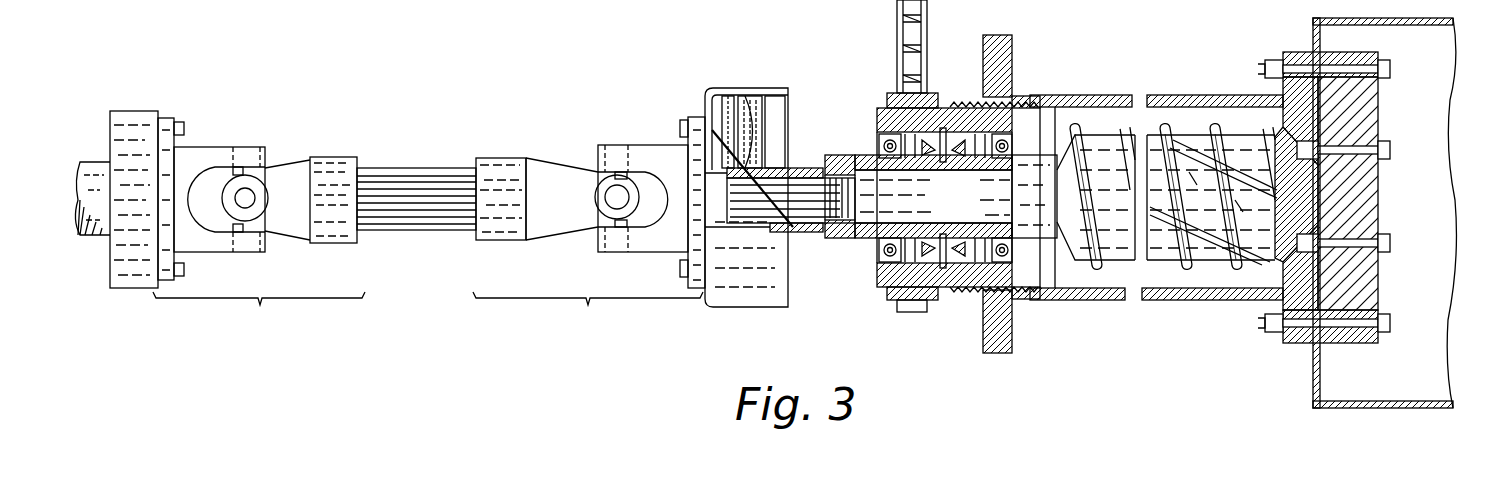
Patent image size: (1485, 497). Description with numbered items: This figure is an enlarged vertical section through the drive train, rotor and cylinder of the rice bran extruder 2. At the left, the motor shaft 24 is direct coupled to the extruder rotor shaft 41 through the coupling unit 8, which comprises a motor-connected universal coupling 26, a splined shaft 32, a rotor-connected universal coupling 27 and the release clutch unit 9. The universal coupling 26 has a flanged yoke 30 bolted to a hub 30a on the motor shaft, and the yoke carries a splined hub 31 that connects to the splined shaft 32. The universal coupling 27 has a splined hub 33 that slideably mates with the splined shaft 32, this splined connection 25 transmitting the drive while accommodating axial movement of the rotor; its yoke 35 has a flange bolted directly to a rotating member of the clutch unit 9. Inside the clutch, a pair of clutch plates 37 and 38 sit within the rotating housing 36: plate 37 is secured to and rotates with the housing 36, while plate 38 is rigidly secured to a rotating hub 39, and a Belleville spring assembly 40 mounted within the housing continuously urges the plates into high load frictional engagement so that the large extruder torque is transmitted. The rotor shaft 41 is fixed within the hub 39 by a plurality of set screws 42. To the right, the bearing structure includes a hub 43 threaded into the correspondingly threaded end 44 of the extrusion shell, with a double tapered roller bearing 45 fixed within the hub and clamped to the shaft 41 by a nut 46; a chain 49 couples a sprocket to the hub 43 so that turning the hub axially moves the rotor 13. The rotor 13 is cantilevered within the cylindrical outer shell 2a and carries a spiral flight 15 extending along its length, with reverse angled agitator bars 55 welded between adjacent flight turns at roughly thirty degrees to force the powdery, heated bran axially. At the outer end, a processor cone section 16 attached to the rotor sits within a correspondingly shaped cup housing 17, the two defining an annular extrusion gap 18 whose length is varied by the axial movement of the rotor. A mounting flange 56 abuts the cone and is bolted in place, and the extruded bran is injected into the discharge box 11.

The extruder 2 is at (1170, 302).
The cylindrical outer casing or shell 2a is at (1246, 74).
The coupling unit 8 is at (443, 255).
The release clutch unit 9 is at (725, 310).
The discharge chamber 11 is at (1313, 375).
The extruder rotor 13 is at (1183, 135).
The spiral flight 15 is at (1095, 268).
The processor cone section 16 is at (1380, 180).
The cup housing 17 is at (1380, 60).
The annular extrusion gap 18 is at (1375, 85).
The motor shaft 24 is at (88, 160).
The splined connection 25 is at (475, 160).
The motor-connected universal coupling 26 is at (259, 319).
The rotor-connected universal coupling 27 is at (588, 319).
The flanged yoke 30 is at (218, 150).
The hub 30a is at (140, 112).
The splined hub 31 is at (328, 157).
The splined shaft 32 is at (405, 168).
The splined hub 33 is at (515, 158).
The yoke 35 is at (635, 145).
The housing 36 is at (705, 108).
The clutch plate 37 is at (722, 100).
The clutch plate 38 is at (745, 103).
The rotating hub 39 is at (795, 165).
The Belleville spring assembly 40 is at (770, 100).
The extruder rotor shaft 41 is at (798, 212).
The set screws 42 is at (812, 165).
The hub 43 is at (880, 270).
The threaded end of extrusion shell 44 is at (985, 292).
The double tapered roller bearing 45 is at (972, 188).
The nut 46 is at (828, 240).
The chain 49 is at (930, 26).
The reverse angled agitator bars 55 is at (1213, 202).
The mounting flange 56 is at (1293, 52).